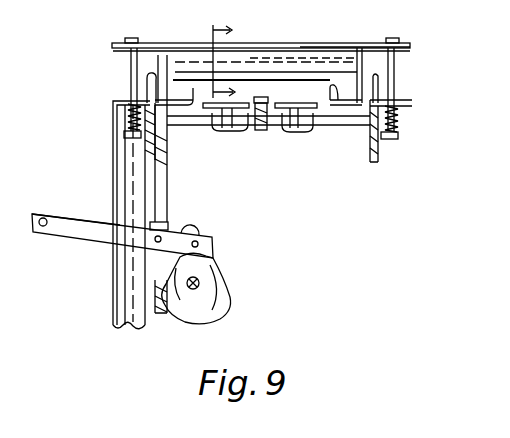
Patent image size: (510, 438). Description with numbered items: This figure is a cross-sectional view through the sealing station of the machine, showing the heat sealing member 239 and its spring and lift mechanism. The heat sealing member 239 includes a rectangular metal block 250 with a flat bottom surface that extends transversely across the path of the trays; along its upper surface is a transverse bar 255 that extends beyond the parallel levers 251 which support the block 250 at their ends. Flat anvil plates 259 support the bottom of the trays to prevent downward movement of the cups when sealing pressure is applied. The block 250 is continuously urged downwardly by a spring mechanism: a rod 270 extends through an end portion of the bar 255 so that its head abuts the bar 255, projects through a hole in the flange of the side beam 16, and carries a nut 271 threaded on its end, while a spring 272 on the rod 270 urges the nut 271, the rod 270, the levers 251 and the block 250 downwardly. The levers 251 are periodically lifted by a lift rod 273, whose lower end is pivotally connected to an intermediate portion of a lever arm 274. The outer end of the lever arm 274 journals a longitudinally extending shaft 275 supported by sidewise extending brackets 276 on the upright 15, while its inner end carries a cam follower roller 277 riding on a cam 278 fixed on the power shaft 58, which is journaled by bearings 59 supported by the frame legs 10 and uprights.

The heat sealing member 239 is at (193, 43).
The front or entrance end legs 10 is at (238, 62).
The rectangular metal block 250 is at (246, 56).
The transverse bar 255 is at (345, 43).
The parallel levers 251 is at (357, 55).
The rod 270 is at (131, 70).
The spring 272 is at (128, 117).
The nut 271 is at (126, 138).
The side beams 16 is at (370, 148).
The flat anvil plates 259 is at (252, 124).
The intermediate upright 15 is at (113, 290).
The lift rod 273 is at (163, 186).
The lever arm 274 is at (108, 242).
The longitudinally extending shaft 275 is at (43, 217).
The sidewise extending brackets 276 is at (97, 222).
The cam follower roller 277 is at (200, 230).
The cam 278 is at (220, 286).
The power shaft 58 is at (199, 296).
The bearings 59 is at (162, 322).